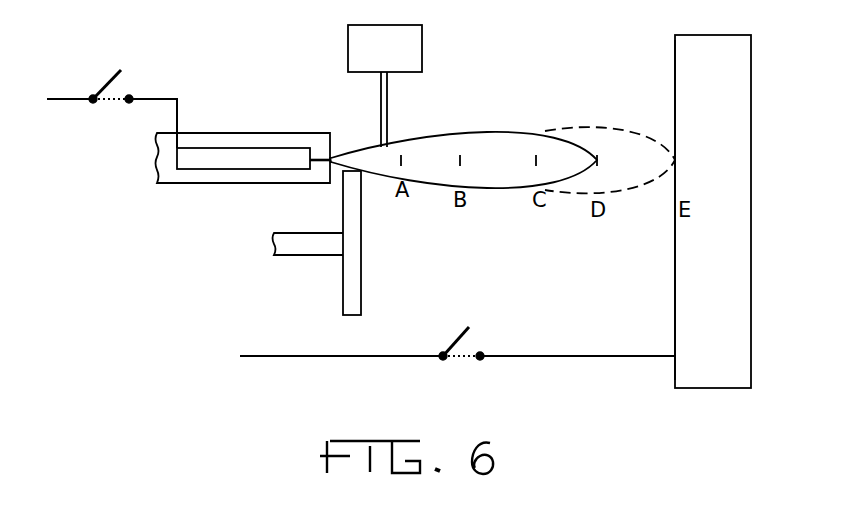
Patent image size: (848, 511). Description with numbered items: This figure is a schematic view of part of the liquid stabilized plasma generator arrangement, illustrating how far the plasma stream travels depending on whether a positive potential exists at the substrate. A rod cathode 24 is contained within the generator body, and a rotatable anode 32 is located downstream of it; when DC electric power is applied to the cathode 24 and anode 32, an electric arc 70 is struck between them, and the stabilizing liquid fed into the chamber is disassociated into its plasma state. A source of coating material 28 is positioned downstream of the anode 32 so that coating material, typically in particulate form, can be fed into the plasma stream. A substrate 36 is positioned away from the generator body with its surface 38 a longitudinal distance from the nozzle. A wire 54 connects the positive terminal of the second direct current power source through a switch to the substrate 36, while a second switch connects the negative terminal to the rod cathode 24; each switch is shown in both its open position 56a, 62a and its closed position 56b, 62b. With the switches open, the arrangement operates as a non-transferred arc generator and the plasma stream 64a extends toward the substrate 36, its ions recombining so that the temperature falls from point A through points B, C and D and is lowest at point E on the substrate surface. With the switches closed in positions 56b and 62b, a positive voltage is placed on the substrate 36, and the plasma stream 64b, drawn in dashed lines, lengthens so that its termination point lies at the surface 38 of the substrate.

The rod cathode 24 is at (265, 155).
The source of coating material 28 is at (401, 54).
The rotatable anode 32 is at (352, 285).
The substrate 36 is at (737, 78).
The surface 38 is at (675, 60).
The wire 54 is at (585, 356).
The open position of switch 56a is at (462, 336).
The closed position of switch 56b is at (470, 354).
The open position of switch 62a is at (116, 68).
The closed position of switch 62b is at (113, 103).
The plasma stream 64a is at (493, 132).
The plasma stream 64b is at (618, 127).
The electric arc 70 is at (331, 163).